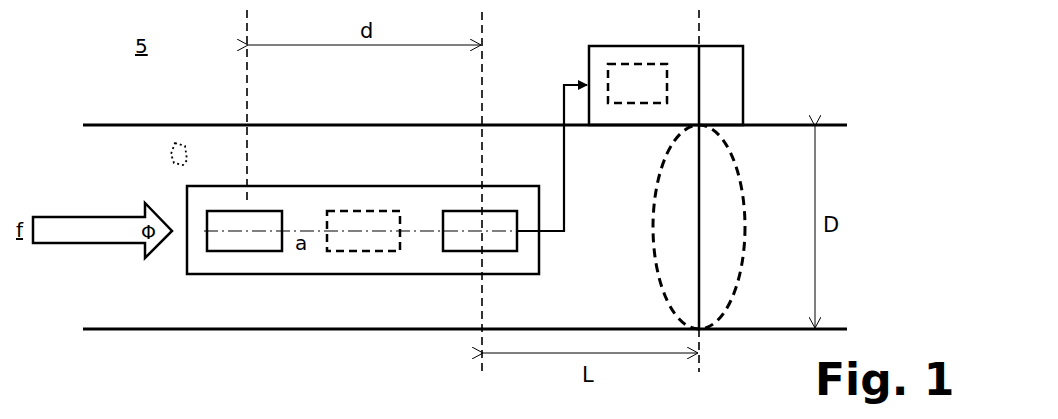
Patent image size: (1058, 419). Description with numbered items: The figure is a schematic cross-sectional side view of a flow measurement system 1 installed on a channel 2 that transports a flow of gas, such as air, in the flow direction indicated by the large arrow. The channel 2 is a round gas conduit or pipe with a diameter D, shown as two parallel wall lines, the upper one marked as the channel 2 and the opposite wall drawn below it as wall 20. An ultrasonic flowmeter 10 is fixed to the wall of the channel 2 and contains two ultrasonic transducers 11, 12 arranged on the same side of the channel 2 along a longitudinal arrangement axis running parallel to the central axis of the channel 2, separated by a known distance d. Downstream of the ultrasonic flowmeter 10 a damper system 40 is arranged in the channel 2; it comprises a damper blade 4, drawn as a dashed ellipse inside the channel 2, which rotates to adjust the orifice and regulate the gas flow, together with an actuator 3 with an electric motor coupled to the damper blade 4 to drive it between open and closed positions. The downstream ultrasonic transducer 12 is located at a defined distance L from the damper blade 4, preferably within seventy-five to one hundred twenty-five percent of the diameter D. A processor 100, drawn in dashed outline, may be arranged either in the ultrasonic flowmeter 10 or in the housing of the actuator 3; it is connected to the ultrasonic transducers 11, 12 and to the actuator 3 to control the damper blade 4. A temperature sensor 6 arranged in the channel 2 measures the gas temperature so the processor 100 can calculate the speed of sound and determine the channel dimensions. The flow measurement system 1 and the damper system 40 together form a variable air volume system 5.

The flow measurement system 1 is at (181, 350).
The channel 2 is at (97, 129).
The actuator 3 is at (733, 83).
The damper blade 4 is at (726, 278).
The variable air volume (VAV) system 5 is at (465, 227).
The temperature sensor 6 is at (170, 155).
The ultrasonic flowmeter 10 is at (199, 268).
The ultrasonic transducer 11 is at (266, 214).
The ultrasonic transducer 12 is at (498, 214).
The opposite pipe wall 20 is at (335, 317).
The damper system 40 is at (761, 106).
The processor 100 is at (359, 214).